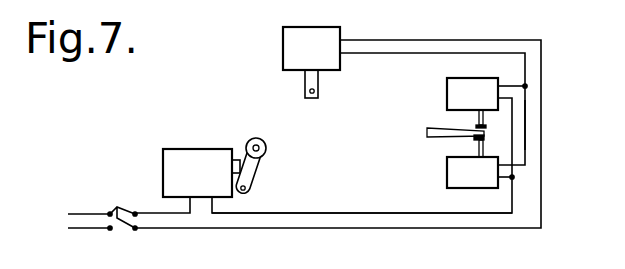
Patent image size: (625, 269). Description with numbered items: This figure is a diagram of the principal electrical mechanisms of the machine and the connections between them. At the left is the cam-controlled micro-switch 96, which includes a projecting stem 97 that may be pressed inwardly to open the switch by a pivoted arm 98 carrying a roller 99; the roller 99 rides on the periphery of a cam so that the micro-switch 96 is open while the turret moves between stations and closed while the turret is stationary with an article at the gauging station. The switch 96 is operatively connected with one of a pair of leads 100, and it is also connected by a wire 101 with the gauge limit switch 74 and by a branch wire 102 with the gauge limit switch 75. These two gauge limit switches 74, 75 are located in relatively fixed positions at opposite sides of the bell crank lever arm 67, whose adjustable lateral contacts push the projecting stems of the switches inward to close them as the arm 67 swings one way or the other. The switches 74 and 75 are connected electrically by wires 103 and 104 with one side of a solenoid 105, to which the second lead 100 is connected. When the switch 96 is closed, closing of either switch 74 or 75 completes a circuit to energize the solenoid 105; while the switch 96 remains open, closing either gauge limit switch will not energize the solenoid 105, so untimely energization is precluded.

The solenoid 105 is at (283, 43).
The gauge limit switch 74 is at (447, 93).
The wire 104 is at (507, 85).
The wire 103 is at (527, 114).
The gauge limit switch 75 is at (447, 170).
The branch wire 102 is at (507, 180).
The bell crank lever arm 67 is at (438, 133).
The micro-switch 96 is at (196, 150).
The projecting stem 97 is at (236, 160).
The pivoted arm 98 is at (255, 170).
The roller 99 is at (264, 151).
The leads 100 is at (148, 212).
The wire 101 is at (310, 213).